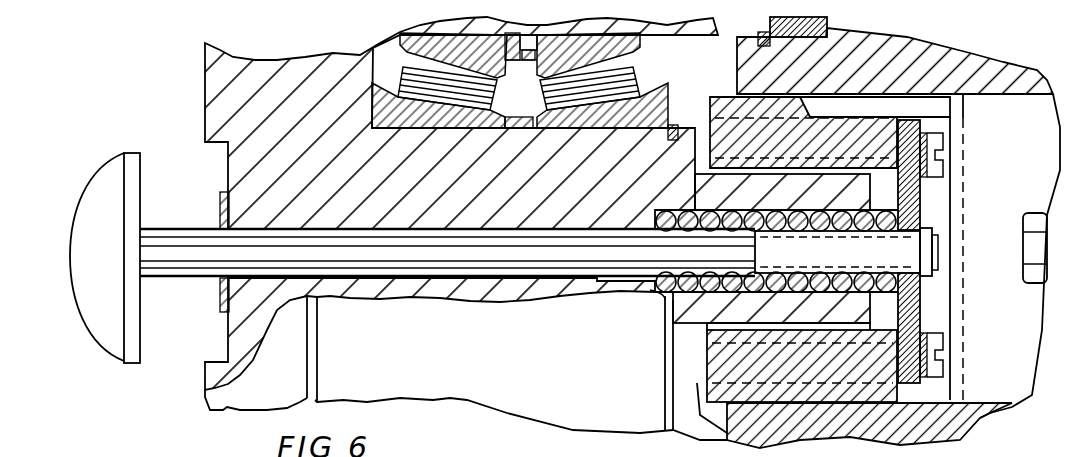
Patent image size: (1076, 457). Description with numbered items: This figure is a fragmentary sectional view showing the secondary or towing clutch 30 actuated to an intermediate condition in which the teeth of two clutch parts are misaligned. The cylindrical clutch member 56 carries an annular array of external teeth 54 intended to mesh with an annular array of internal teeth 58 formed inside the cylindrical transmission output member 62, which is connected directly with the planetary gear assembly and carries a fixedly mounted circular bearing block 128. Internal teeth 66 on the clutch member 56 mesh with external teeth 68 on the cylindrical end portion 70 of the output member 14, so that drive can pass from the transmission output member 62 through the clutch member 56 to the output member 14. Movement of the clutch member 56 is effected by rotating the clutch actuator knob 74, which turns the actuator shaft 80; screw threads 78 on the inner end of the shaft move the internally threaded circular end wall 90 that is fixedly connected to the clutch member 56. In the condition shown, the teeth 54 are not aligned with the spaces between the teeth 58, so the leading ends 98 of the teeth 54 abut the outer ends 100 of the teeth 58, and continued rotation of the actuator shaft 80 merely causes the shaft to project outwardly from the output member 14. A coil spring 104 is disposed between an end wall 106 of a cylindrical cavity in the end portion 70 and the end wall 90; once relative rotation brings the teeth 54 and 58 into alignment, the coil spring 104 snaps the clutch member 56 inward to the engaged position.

The output member 14 is at (194, 87).
The secondary clutch 30 is at (695, 335).
The teeth 54 is at (816, 230).
The clutch member 56 is at (682, 374).
The teeth 58 is at (962, 96).
The transmission output member 62 is at (977, 62).
The teeth 66 is at (846, 152).
The teeth 68 is at (775, 172).
The cylindrical end portion 70 is at (923, 312).
The clutch actuator knob 74 is at (100, 343).
The screw threads 78 is at (928, 237).
The actuator shaft 80 is at (176, 240).
The end wall 90 is at (922, 318).
The leading ends 98 is at (793, 113).
The outer ends 100 is at (808, 115).
The coil spring 104 is at (654, 348).
The end wall 106 is at (652, 285).
The bearing block 128 is at (837, 28).